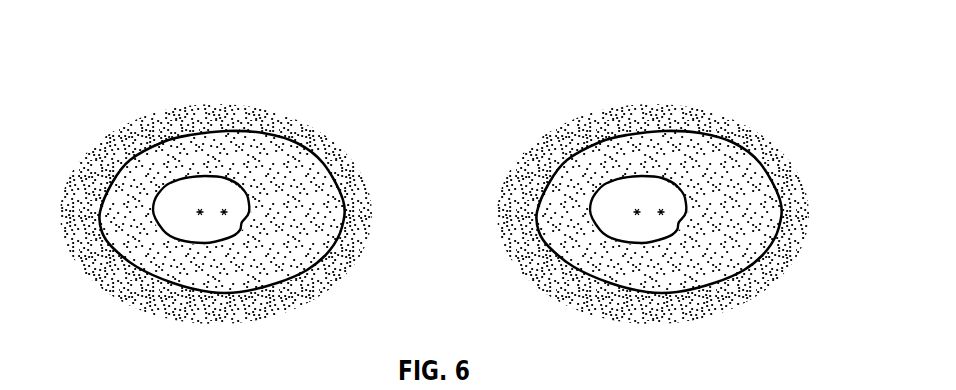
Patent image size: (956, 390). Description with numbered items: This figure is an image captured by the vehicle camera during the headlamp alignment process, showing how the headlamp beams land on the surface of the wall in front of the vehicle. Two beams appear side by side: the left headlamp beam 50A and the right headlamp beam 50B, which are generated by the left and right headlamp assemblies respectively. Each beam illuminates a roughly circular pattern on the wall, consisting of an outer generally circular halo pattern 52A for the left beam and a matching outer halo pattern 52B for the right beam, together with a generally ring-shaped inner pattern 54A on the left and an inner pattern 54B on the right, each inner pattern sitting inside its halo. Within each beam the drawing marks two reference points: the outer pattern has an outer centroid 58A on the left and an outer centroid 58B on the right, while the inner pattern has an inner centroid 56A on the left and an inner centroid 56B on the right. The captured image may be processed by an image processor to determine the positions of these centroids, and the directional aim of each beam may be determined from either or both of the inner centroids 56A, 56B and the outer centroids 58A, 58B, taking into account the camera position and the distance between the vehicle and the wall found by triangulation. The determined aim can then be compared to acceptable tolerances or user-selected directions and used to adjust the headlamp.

The left headlamp beam 50A is at (296, 87).
The outer halo pattern 52A is at (130, 157).
The inner pattern 54A is at (190, 177).
The inner centroid 56A is at (202, 208).
The outer centroid 58A is at (226, 208).
The right headlamp beam 50B is at (661, 177).
The outer halo pattern 52B is at (634, 205).
The inner pattern 54B is at (619, 161).
The inner centroid 56B is at (636, 139).
The outer centroid 58B is at (681, 137).